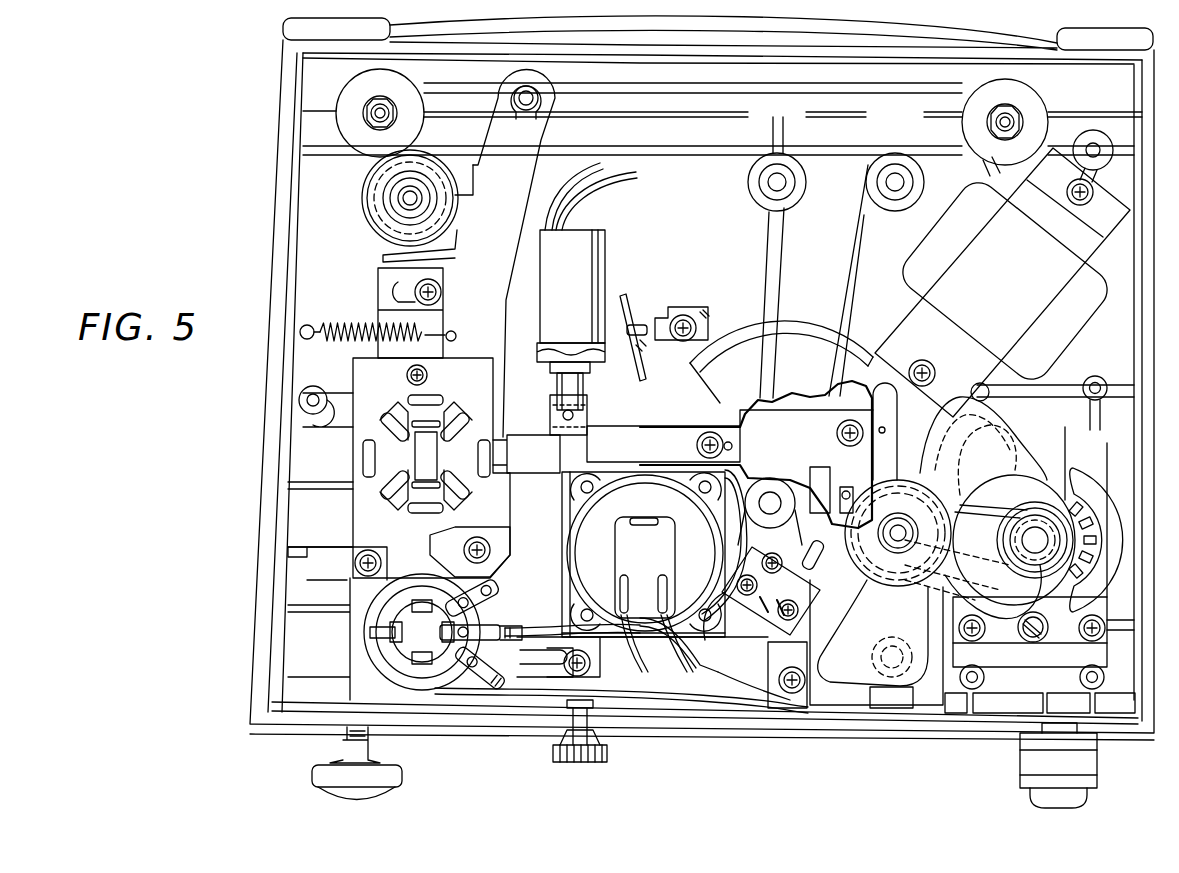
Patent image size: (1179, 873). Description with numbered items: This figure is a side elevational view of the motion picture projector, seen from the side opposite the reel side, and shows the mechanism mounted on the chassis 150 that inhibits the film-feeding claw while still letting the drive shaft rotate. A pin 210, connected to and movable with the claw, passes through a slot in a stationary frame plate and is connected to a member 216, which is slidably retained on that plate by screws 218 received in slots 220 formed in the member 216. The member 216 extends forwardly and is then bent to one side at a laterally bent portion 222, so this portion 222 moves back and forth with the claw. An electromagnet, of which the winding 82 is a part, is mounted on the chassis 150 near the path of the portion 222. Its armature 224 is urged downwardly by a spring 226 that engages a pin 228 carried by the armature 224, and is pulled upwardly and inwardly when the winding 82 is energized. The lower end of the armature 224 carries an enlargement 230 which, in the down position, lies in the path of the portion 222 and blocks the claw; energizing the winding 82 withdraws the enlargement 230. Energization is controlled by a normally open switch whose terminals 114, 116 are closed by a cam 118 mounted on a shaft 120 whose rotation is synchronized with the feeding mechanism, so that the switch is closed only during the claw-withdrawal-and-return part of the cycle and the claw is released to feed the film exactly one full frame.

The chassis 150 is at (248, 492).
The solenoid winding 82 is at (600, 258).
The armature 224 is at (566, 389).
The pin 228 is at (568, 410).
The enlargement 230 is at (568, 435).
The laterally bent portion 222 is at (590, 442).
The spring 226 is at (641, 372).
The member 216 is at (860, 412).
The cam 118 is at (796, 460).
The screws 218 is at (855, 420).
The slots 220 is at (884, 428).
The pin 210 is at (860, 500).
The shaft 120 is at (768, 515).
The switch terminal 114 is at (786, 572).
The switch terminal 116 is at (795, 580).